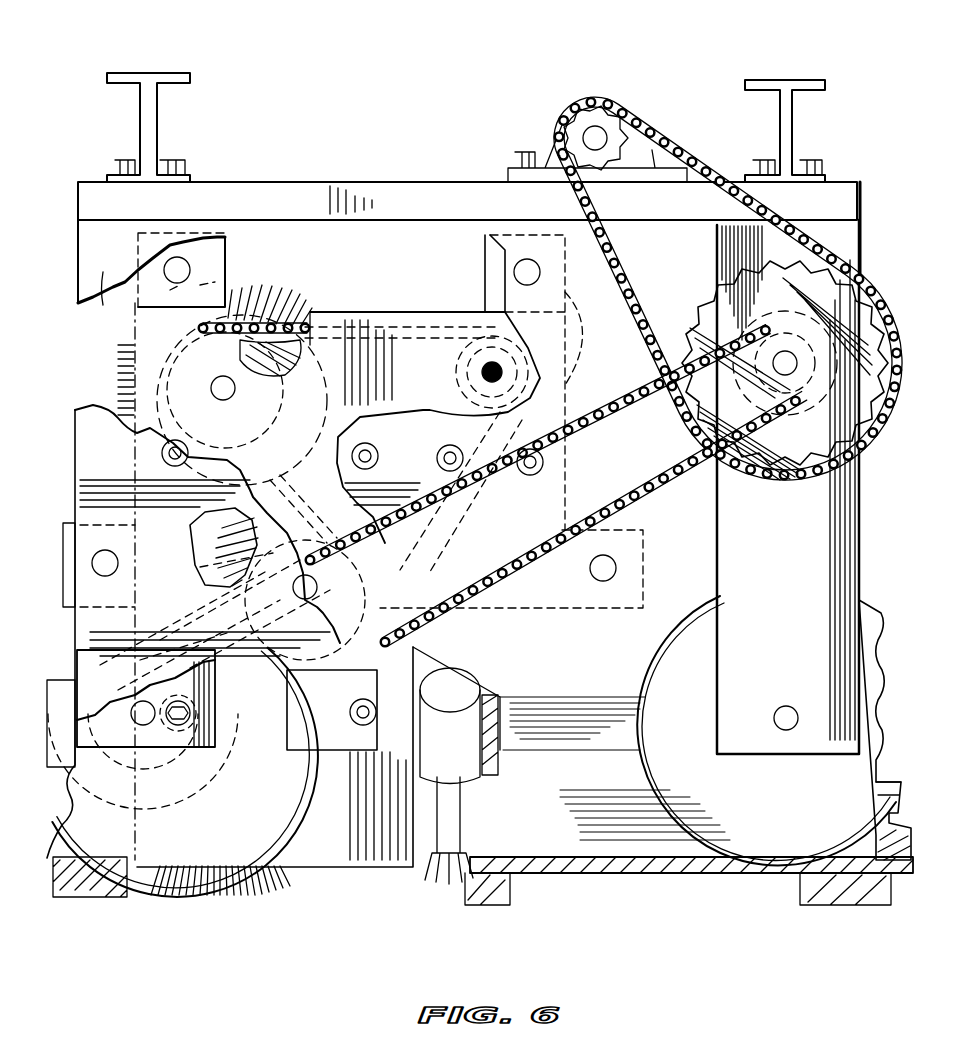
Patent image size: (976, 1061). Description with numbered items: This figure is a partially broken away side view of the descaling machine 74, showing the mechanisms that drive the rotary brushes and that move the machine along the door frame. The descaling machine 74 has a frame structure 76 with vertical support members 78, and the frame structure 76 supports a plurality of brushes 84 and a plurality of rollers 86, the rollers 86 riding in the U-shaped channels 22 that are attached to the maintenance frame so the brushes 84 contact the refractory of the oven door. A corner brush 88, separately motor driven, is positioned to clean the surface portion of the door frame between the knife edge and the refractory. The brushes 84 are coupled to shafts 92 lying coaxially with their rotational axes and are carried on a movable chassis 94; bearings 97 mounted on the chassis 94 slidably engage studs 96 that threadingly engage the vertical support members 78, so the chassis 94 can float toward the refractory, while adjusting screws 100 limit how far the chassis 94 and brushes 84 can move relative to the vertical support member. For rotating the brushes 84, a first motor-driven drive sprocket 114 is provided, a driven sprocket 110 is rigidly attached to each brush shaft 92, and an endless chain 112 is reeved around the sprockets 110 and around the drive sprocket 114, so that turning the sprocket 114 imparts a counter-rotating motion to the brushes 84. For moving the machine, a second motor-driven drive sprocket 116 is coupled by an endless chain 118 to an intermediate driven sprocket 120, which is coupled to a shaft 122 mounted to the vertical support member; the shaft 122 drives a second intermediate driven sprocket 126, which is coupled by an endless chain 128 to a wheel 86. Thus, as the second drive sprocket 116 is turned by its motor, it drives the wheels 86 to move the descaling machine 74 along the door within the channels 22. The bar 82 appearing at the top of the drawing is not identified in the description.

The channel 22 is at (562, 838).
The descaling machine 74 is at (340, 112).
The frame structure 76 is at (786, 586).
The vertical support member 78 is at (168, 80).
The top bar 82 is at (405, 180).
The brush 84 is at (280, 298).
The roller 86 is at (150, 833).
The corner brush 88 is at (436, 880).
The brush shaft 92 is at (223, 400).
The chassis 94 is at (591, 338).
The stud 96 is at (183, 268).
The bearing 97 is at (225, 268).
The adjusting screw 100 is at (160, 453).
The driven sprocket 110 is at (251, 518).
The endless chain 112 is at (392, 312).
The first motor-driven drive sprocket 114 is at (471, 372).
The second motor-driven drive sprocket 116 is at (590, 122).
The endless chain 118 is at (672, 158).
The intermediate driven sprocket 120 is at (720, 302).
The shaft 122 is at (785, 350).
The second intermediate driven sprocket 126 is at (815, 360).
The endless chain 128 is at (512, 572).